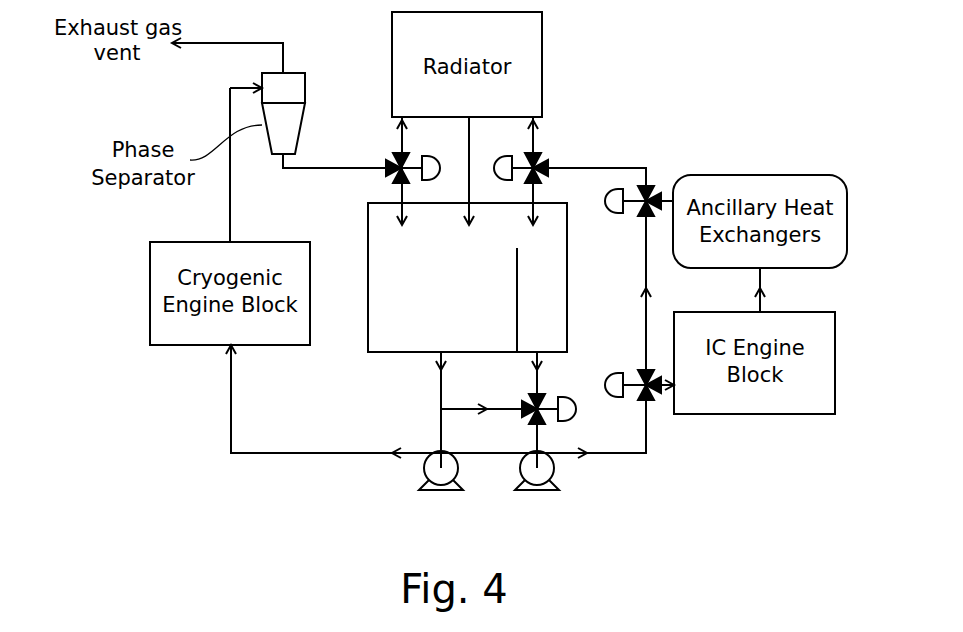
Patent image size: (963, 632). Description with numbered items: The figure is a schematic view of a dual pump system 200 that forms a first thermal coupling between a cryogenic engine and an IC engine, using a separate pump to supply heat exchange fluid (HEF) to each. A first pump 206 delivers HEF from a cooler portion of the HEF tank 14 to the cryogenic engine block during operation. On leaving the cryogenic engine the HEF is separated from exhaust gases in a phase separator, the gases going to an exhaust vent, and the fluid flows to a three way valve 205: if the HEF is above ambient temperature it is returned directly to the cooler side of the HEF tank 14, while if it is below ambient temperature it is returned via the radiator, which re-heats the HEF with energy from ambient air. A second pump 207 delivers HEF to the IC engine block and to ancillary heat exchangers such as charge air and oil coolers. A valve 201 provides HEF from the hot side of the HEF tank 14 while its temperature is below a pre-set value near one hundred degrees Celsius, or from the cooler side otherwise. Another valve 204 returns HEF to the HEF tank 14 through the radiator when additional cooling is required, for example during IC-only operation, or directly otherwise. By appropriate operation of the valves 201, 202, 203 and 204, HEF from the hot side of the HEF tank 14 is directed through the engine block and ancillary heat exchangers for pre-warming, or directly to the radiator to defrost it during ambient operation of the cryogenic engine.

The dual pump system 200 is at (718, 88).
The valve 201 is at (577, 417).
The valve 202 is at (620, 372).
The valve 203 is at (620, 214).
The valve 204 is at (494, 157).
The three way valve 205 is at (440, 157).
The first pump 206 is at (438, 515).
The pump 207 is at (535, 515).
The HEF tank 14 is at (390, 353).